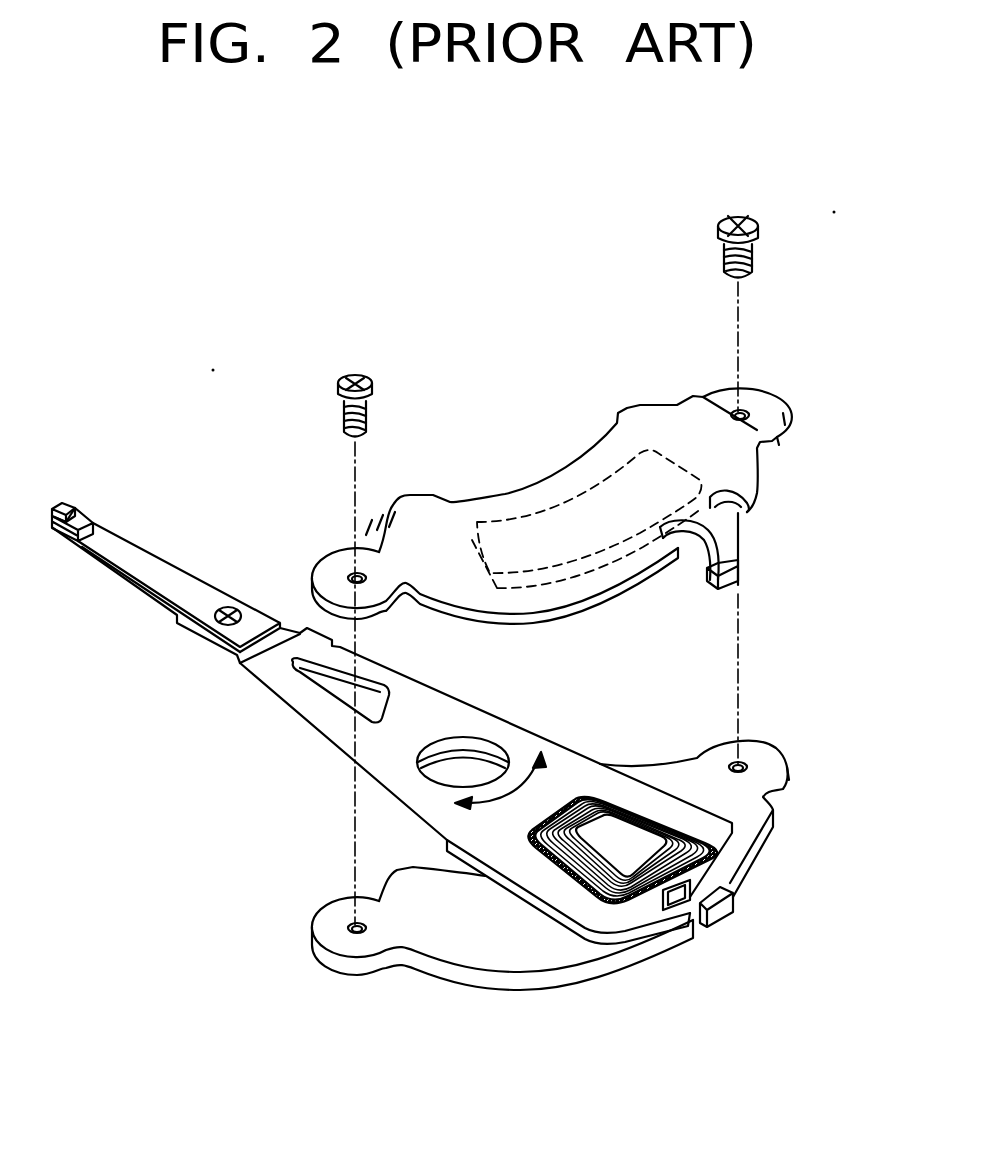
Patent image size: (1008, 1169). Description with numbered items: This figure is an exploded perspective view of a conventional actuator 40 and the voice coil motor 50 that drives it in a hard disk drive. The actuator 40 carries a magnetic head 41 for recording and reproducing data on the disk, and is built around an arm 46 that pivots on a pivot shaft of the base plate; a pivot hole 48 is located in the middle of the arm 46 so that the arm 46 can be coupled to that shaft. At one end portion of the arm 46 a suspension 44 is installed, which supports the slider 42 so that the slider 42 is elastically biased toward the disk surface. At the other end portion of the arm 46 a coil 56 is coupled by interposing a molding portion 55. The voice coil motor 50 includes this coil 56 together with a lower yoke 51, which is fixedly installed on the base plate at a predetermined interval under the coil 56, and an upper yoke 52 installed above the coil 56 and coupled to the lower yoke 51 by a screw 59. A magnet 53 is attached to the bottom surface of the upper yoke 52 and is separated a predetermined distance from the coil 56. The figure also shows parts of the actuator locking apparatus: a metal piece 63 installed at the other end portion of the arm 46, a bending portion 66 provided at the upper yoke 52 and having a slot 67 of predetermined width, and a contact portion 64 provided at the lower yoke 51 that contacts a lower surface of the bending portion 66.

The actuator 40 is at (222, 758).
The magnetic head 41 is at (63, 500).
The slider 42 is at (90, 513).
The suspension 44 is at (203, 597).
The arm 46 is at (414, 686).
The pivot hole 48 is at (466, 758).
The voice coil motor 50 is at (588, 408).
The lower yoke 51 is at (768, 803).
The upper yoke 52 is at (457, 508).
The magnet 53 is at (566, 505).
The molding portion 55 is at (632, 805).
The coil 56 is at (585, 792).
The screw 59 is at (722, 256).
The metal piece 63 is at (700, 915).
The contact portion 64 is at (712, 918).
The bending portion 66 is at (743, 542).
The slot 67 is at (743, 580).